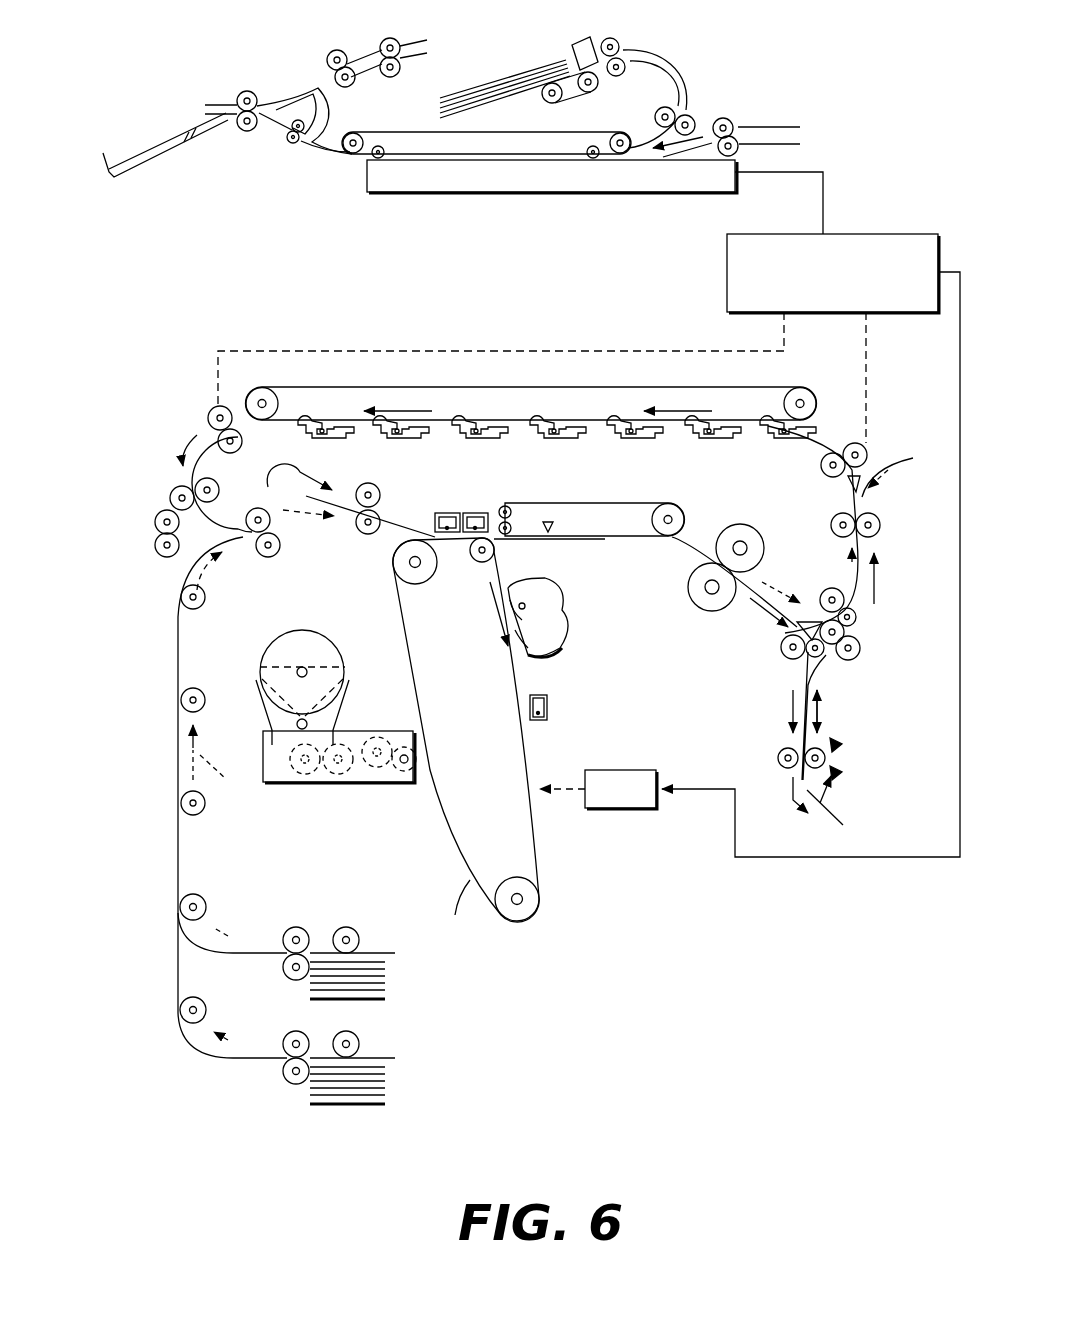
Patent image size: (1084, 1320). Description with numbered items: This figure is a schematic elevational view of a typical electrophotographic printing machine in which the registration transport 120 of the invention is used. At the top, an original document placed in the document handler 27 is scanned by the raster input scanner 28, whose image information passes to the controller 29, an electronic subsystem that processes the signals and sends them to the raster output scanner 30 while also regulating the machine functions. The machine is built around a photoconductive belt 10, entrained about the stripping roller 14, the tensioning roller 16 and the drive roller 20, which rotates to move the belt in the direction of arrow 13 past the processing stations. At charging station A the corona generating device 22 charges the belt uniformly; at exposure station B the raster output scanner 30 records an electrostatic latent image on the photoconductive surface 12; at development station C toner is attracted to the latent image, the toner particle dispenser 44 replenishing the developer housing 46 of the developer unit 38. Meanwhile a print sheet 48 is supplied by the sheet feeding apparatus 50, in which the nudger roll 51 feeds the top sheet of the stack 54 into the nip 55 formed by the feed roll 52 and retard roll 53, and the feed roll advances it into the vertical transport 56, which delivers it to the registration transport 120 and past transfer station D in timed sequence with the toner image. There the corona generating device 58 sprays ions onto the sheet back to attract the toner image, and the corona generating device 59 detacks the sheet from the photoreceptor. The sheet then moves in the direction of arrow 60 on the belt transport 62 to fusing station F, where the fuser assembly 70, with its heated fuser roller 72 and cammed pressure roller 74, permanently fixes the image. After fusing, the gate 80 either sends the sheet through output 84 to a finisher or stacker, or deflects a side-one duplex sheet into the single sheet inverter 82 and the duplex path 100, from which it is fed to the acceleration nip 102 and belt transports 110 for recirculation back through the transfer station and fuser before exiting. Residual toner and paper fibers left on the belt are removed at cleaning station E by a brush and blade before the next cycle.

The photoconductive belt 10 is at (537, 850).
The photoconductive surface 12 is at (472, 885).
The arrow 13 is at (500, 630).
The stripping roller 14 is at (479, 562).
The tensioning roller 16 is at (393, 562).
The drive roller 20 is at (517, 913).
The corona generating device 22 is at (549, 697).
The document handler 27 is at (714, 50).
The raster input scanner 28 is at (497, 176).
The controller 29 is at (727, 286).
The raster output scanner 30 is at (620, 770).
The developer unit 38 is at (258, 712).
The toner particle dispenser 44 is at (327, 643).
The developer housing 46 is at (275, 773).
The print sheet 48 is at (223, 764).
The sheet feeding apparatus 50 is at (288, 908).
The nudger roll 51 is at (347, 926).
The feed roll 52 is at (298, 926).
The retard roll 53 is at (290, 978).
The stack 54 is at (365, 1005).
The nip 55 is at (285, 951).
The vertical transport 56 is at (179, 880).
The corona generating device 58 is at (455, 512).
The corona generating device 59 is at (480, 512).
The arrow 60 is at (573, 549).
The belt transport 62 is at (648, 503).
The fuser assembly 70 is at (686, 619).
The fuser roller 72 is at (706, 611).
The pressure roller 74 is at (750, 528).
The gate 80 is at (798, 629).
The single sheet inverter 82 is at (865, 666).
The output 84 is at (905, 460).
The duplex path 100 is at (568, 342).
The acceleration nip 102 is at (210, 412).
The belt transports 110 is at (325, 386).
The registration transport 120 is at (424, 474).
The charging station A is at (560, 703).
The exposure station B is at (602, 818).
The development station C is at (310, 787).
The transfer station D is at (434, 505).
The cleaning station E is at (578, 592).
The fusing station F is at (716, 536).